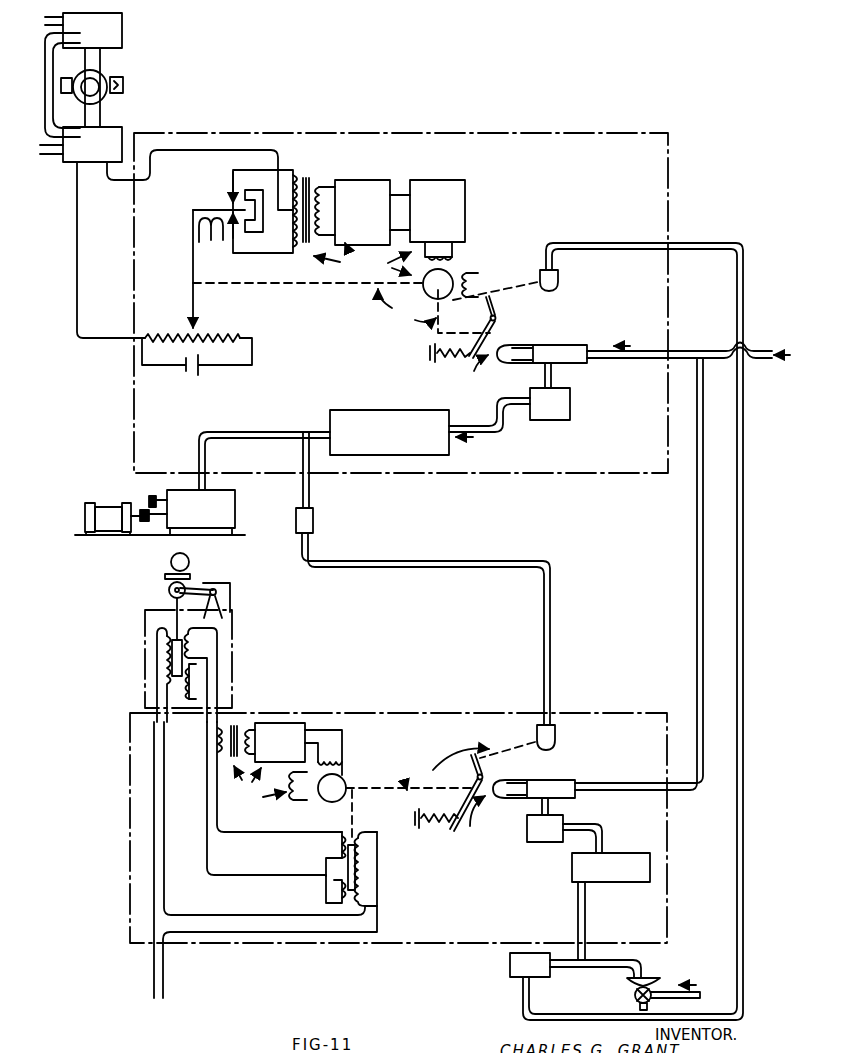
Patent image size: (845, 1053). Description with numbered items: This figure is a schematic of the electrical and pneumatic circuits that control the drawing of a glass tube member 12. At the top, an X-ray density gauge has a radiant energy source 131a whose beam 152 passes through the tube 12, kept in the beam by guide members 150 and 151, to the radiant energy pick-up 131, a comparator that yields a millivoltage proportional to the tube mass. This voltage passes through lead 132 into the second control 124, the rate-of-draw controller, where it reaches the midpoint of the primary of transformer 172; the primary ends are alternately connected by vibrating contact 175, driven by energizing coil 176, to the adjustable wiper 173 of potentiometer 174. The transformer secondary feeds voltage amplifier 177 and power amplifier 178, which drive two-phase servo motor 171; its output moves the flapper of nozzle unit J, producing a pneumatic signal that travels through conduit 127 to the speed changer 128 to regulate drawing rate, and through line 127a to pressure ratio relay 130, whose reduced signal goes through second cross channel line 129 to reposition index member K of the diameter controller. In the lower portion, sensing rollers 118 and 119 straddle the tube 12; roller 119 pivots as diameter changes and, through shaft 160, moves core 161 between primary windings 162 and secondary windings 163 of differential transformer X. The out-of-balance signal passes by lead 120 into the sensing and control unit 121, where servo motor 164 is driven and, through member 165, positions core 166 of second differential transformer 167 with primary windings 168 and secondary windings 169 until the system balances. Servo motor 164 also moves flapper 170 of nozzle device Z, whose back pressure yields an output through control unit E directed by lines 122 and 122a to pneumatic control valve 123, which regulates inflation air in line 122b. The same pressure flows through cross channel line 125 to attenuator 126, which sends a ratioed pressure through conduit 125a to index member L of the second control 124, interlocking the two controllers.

The radiant energy source 131a is at (115, 30).
The radiant energy pick-up 131 is at (105, 153).
The tube member 12 is at (107, 75).
The guide member 150 is at (62, 72).
The guide member 151 is at (123, 84).
The beam 152 is at (97, 113).
The lead 132 is at (181, 152).
The second control 124 is at (447, 116).
The transformer 172 is at (308, 190).
The vibrating contact 175 is at (242, 211).
The energizing coil 176 is at (206, 243).
The voltage amplifier 177 is at (373, 223).
The power amplifier 178 is at (448, 223).
The servo motor 171 is at (449, 270).
The adjustable wiper 173 is at (197, 323).
The potentiometer 174 is at (228, 348).
The conduit 127 is at (250, 416).
The line 127a is at (303, 463).
The speed changer 128 is at (213, 518).
The pressure ratio relay 130 is at (314, 520).
The second cross channel line 129 is at (485, 546).
The sensing roller 118 is at (171, 562).
The sensing roller 119 is at (170, 591).
The shaft 160 is at (172, 622).
The core 161 is at (175, 660).
The primary windings 162 is at (160, 641).
The secondary windings 163 is at (200, 641).
The lead 120 is at (220, 692).
The sensing and control unit 121 is at (413, 722).
The servo motor 164 is at (342, 775).
The member 165 is at (350, 816).
The secondary windings 169 is at (340, 848).
The primary windings 168 is at (360, 845).
The core 166 is at (355, 866).
The second differential transformer 167 is at (384, 879).
The flapper 170 is at (462, 810).
The line 122 is at (578, 907).
The line 122a is at (610, 960).
The line 122b is at (652, 1006).
The cross channel line 125 is at (563, 968).
The conduit 125a is at (740, 870).
The attenuator 126 is at (510, 965).
The pneumatic control valve 123 is at (634, 999).